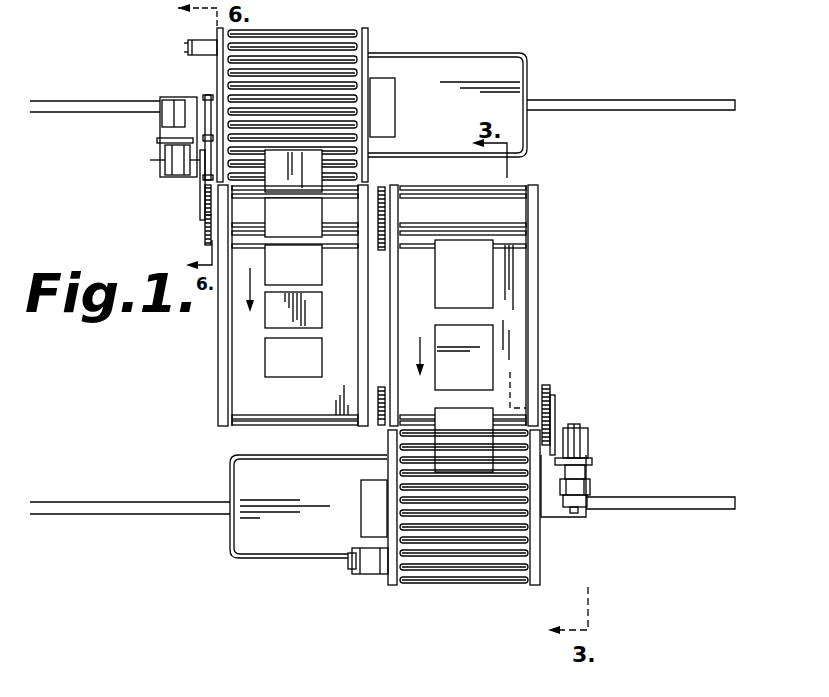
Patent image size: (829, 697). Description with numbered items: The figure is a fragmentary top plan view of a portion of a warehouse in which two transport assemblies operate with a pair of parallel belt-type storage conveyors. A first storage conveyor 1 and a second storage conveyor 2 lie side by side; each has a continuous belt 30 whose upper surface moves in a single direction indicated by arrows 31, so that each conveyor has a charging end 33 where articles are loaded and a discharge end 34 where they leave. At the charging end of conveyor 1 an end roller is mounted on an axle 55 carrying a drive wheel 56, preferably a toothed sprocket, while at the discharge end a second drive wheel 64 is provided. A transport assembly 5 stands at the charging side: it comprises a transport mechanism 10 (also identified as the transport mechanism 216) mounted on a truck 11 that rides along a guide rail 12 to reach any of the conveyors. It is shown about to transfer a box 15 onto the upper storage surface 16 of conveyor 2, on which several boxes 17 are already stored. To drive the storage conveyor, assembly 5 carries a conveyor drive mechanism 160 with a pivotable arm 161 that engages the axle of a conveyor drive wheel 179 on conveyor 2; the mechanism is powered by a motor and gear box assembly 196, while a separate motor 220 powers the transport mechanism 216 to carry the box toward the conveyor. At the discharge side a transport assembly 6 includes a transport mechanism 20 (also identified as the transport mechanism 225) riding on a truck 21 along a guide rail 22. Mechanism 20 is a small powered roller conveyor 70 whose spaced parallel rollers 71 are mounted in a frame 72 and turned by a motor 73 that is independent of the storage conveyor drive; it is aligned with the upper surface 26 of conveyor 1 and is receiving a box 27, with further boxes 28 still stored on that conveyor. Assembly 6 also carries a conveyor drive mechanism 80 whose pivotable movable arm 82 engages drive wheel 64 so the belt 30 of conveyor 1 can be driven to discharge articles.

The first storage conveyor 1 is at (486, 296).
The second storage conveyor 2 is at (240, 378).
The transport assembly 5 is at (387, 63).
The transport assembly 6 is at (270, 550).
The transport mechanism 10 is at (292, 93).
The truck 11 is at (447, 95).
The guide rail 12 is at (597, 100).
The box 15 is at (300, 183).
The upper storage surface 16 is at (243, 336).
The boxes 17 is at (298, 247).
The transport mechanism 20 is at (481, 528).
The truck 21 is at (208, 520).
The guide rail 22 is at (700, 510).
The upper surface 26 is at (517, 352).
The box 27 is at (441, 416).
The boxes 28 is at (447, 333).
The continuous belt 30 is at (486, 296).
The arrows 31 is at (252, 284).
The charging end 33 is at (517, 190).
The discharge end 34 is at (521, 395).
The axle 55 is at (538, 204).
The drive wheel 56 is at (380, 188).
The drive wheel 64 is at (553, 393).
The powered roller conveyor 70 is at (430, 584).
The rollers 71 is at (508, 561).
The frame 72 is at (540, 579).
The motor 73 is at (370, 575).
The conveyor drive mechanism 80 is at (586, 486).
The movable arm 82 is at (560, 417).
The conveyor drive mechanism 160 is at (165, 133).
The pivotable arm 161 is at (205, 207).
The conveyor drive wheel 179 is at (205, 236).
The motor and gear box assembly 196 is at (172, 102).
The transport mechanism 216 is at (315, 31).
The motor 220 is at (190, 42).
The transport mechanism 225 is at (497, 583).